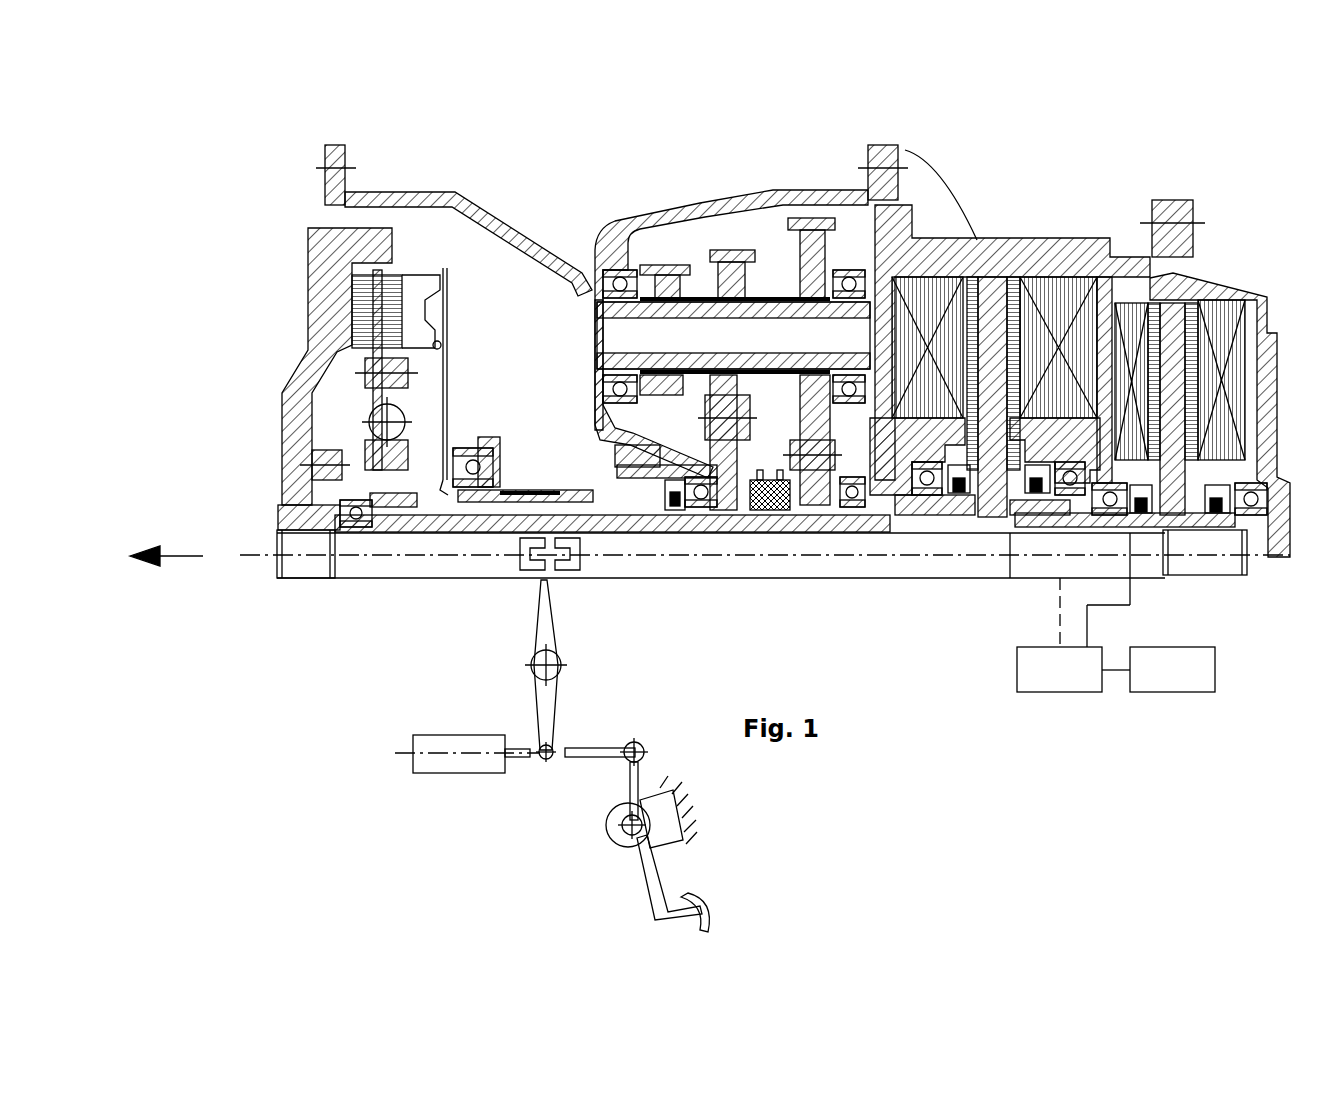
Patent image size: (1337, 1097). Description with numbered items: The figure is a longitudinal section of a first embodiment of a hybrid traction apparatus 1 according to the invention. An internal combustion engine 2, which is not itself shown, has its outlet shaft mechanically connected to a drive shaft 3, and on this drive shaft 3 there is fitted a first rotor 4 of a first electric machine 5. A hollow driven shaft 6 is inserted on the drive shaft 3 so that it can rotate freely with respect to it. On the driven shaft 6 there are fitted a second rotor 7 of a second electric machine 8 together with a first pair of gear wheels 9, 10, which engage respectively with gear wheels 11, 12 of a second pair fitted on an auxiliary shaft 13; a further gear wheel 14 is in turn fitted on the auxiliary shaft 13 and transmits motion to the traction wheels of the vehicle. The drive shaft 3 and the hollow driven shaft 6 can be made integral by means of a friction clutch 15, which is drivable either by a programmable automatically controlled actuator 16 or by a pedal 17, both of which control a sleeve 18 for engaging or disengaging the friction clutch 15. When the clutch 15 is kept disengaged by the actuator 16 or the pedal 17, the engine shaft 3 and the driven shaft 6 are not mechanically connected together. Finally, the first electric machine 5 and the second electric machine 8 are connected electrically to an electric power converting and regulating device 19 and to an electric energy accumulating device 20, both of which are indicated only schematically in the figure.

The hybrid traction apparatus 1 is at (915, 640).
The internal combustion engine 2 is at (180, 556).
The drive shaft 3 is at (635, 540).
The first rotor 4 is at (1180, 540).
The first electric machine 5 is at (1247, 300).
The hollow driven shaft 6 is at (448, 530).
The second rotor 7 is at (990, 540).
The second electric machine 8 is at (1028, 290).
The first gear wheel 9 is at (740, 530).
The gear wheel of first pair 10 is at (818, 540).
The gear wheel of second pair 11 is at (745, 300).
The gear wheel of second pair 12 is at (810, 300).
The auxiliary shaft 13 is at (655, 352).
The further gear wheel 14 is at (655, 295).
The friction clutch 15 is at (330, 246).
The actuator 16 is at (468, 745).
The pedal 17 is at (603, 752).
The sleeve 18 is at (480, 440).
The electric power converting and regulating device 19 is at (1073, 635).
The electric energy accumulating device 20 is at (1158, 669).